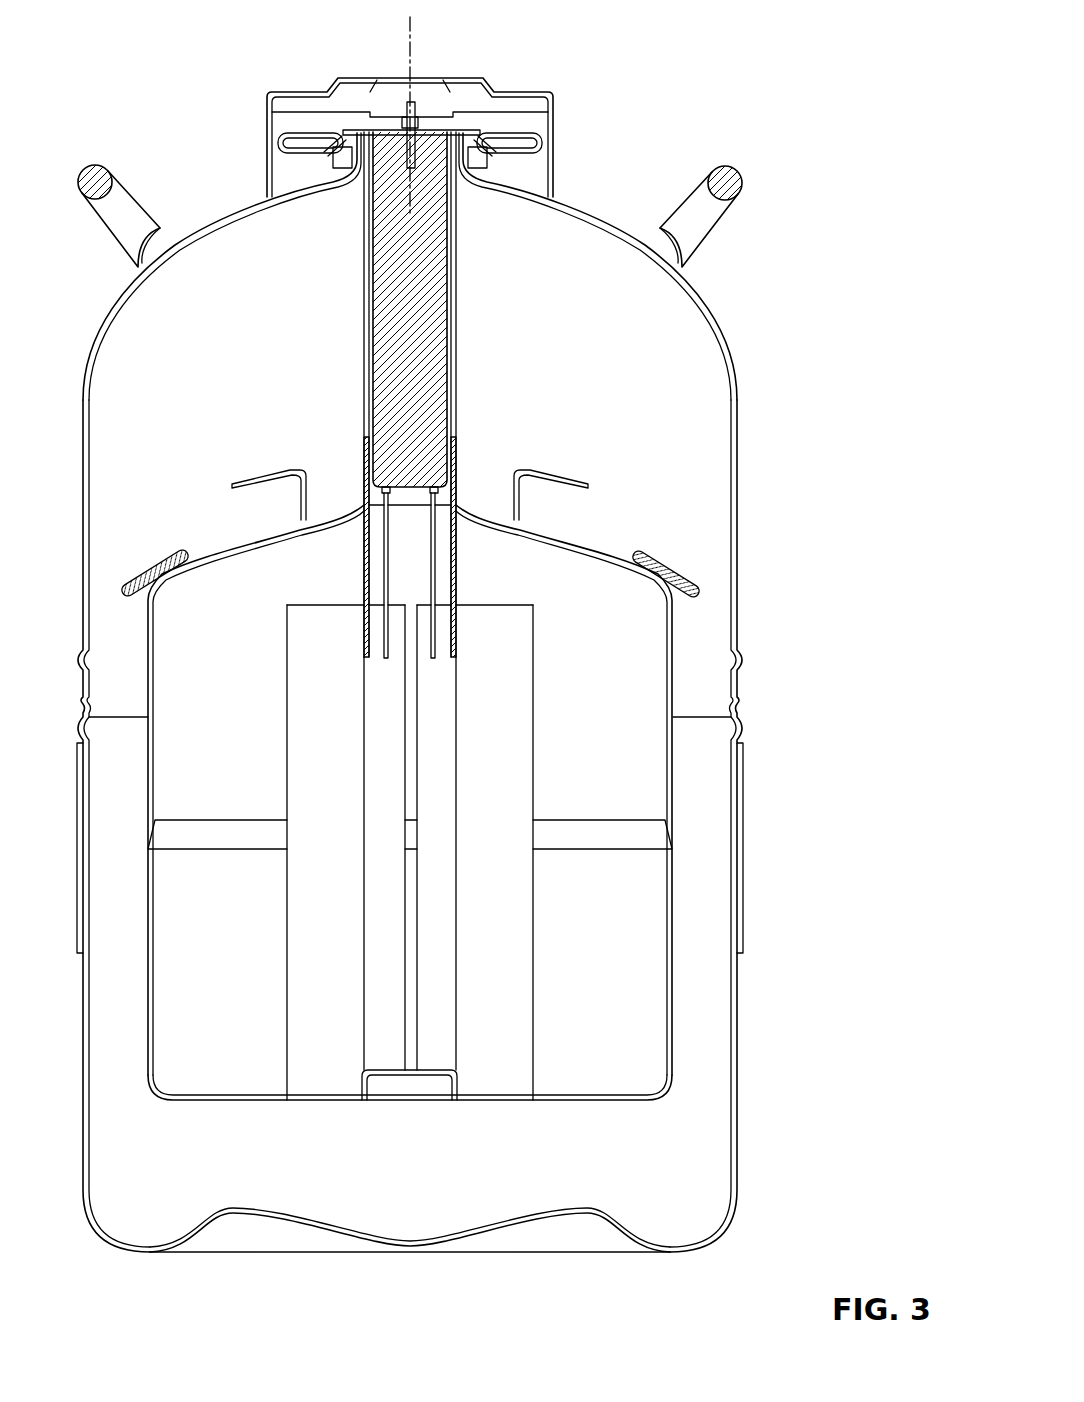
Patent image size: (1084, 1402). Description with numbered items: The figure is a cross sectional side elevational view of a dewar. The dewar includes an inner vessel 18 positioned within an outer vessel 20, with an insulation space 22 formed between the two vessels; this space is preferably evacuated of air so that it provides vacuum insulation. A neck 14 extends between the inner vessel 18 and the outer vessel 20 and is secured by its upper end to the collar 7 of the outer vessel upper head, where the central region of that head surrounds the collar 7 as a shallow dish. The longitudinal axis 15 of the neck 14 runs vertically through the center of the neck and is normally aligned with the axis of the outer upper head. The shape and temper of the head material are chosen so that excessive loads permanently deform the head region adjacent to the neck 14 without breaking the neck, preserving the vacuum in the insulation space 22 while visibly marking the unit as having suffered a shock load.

The collar 7 is at (490, 150).
The neck 14 is at (454, 328).
The longitudinal axis of the neck 15 is at (411, 52).
The inner vessel 18 is at (674, 637).
The outer vessel 20 is at (738, 458).
The insulation space 22 is at (683, 392).